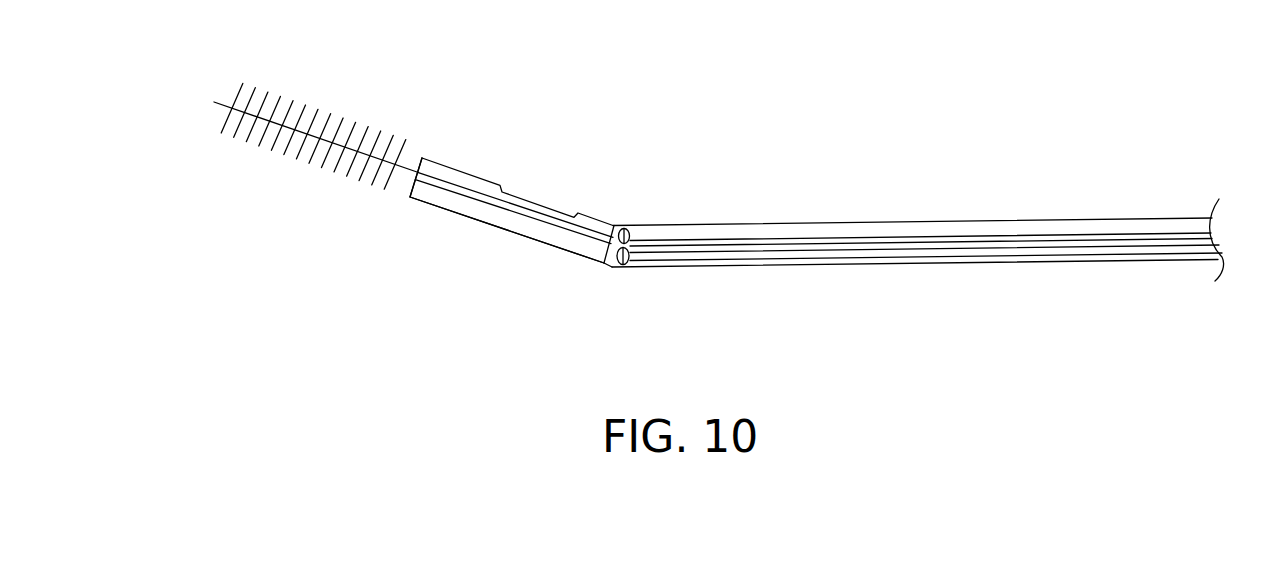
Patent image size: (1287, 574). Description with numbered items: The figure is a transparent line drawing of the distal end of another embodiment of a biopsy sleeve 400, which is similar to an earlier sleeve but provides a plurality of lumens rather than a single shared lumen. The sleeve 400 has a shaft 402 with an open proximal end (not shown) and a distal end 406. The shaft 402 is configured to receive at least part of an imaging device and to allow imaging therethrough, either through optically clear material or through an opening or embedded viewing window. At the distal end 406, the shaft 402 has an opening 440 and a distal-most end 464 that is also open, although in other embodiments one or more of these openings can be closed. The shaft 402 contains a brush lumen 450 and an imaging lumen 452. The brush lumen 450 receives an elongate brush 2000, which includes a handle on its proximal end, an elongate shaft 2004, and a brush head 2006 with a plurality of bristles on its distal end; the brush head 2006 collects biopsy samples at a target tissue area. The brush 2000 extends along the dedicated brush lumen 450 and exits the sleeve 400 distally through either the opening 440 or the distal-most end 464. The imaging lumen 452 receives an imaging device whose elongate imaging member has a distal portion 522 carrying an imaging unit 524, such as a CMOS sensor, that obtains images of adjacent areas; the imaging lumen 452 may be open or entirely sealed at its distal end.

The sleeve 400 is at (466, 289).
The shaft 402 is at (700, 225).
The distal end 406 is at (427, 158).
The opening 440 is at (556, 182).
The brush lumen 450 is at (1168, 196).
The imaging lumen 452 is at (1163, 278).
The distal-most end 464 is at (388, 202).
The distal portion 522 is at (799, 284).
The imaging unit 524 is at (628, 258).
The elongate brush 2000 is at (1123, 188).
The elongate shaft 2004 is at (855, 242).
The brush head 2006 is at (223, 92).